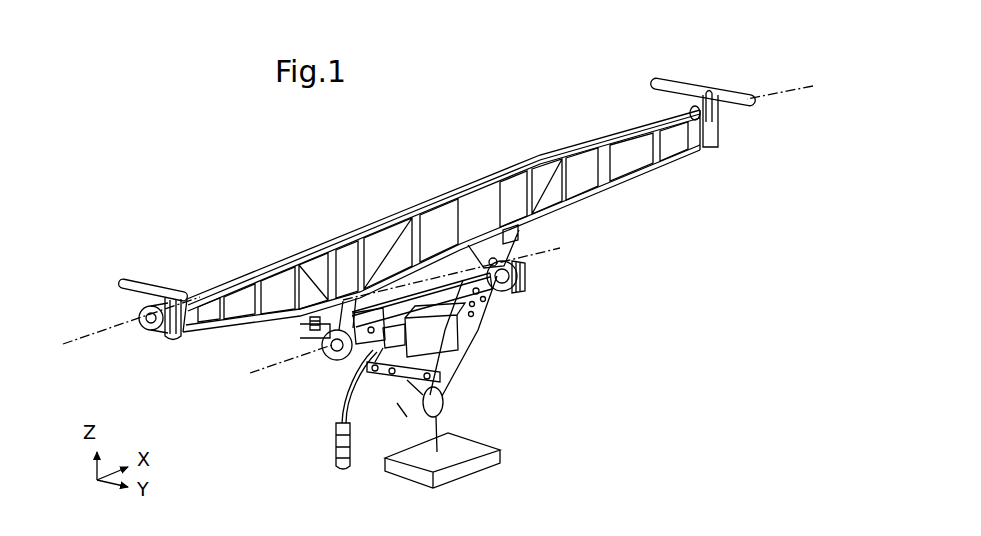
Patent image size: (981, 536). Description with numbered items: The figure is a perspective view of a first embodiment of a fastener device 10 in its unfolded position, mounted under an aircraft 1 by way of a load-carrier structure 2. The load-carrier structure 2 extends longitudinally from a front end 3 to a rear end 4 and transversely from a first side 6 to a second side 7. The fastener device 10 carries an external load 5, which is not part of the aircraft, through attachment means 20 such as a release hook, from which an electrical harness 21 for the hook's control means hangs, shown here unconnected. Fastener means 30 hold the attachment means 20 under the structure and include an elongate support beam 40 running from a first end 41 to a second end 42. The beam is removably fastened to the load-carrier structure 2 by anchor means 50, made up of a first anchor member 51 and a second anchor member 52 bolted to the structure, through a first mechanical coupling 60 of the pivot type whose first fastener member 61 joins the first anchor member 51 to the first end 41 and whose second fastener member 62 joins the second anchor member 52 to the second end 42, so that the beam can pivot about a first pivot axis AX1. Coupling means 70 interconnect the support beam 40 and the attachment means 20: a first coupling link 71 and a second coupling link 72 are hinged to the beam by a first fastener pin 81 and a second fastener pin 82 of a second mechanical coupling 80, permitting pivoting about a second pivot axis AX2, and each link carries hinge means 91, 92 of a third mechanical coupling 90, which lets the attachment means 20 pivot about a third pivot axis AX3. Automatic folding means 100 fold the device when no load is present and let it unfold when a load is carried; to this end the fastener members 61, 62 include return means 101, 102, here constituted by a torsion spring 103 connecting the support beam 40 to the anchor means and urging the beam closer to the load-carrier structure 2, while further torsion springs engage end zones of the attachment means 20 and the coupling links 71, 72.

The aircraft 1 is at (623, 320).
The load-carrier structure 2 is at (299, 169).
The front end 3 is at (168, 378).
The rear end 4 is at (800, 153).
The external load 5 is at (467, 469).
The first side 6 is at (802, 86).
The second side 7 is at (657, 82).
The fastener device 10 is at (740, 267).
The attachment means 20 is at (390, 393).
The electrical harness 21 is at (349, 436).
The fastener means 30 is at (487, 147).
The support beam 40 is at (587, 167).
The first end 41 is at (238, 300).
The second end 42 is at (690, 152).
The anchor means 50 is at (647, 76).
The first anchor member 51 is at (128, 280).
The second anchor member 52 is at (673, 77).
The first mechanical coupling 60 is at (727, 129).
The first fastener member 61 is at (177, 280).
The second fastener member 62 is at (672, 106).
The coupling means 70 is at (570, 264).
The first coupling link 71 is at (320, 331).
The second coupling link 72 is at (520, 249).
The second mechanical coupling 80 is at (297, 332).
The first fastener pin 81 is at (357, 270).
The second fastener pin 82 is at (473, 240).
The third mechanical coupling 90 is at (514, 300).
The hinge means 91 is at (327, 350).
The hinge means 92 is at (533, 280).
The automatic folding means 100 is at (717, 170).
The return means 101 is at (193, 280).
The return means 102 is at (662, 98).
The torsion spring 103 is at (707, 93).
The first pivot axis AX1 is at (98, 331).
The second pivot axis AX2 is at (412, 243).
The third pivot axis AX3 is at (250, 373).